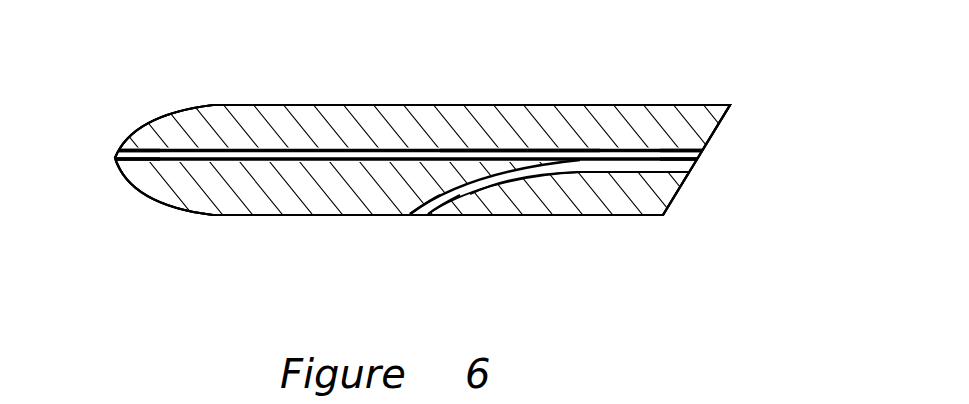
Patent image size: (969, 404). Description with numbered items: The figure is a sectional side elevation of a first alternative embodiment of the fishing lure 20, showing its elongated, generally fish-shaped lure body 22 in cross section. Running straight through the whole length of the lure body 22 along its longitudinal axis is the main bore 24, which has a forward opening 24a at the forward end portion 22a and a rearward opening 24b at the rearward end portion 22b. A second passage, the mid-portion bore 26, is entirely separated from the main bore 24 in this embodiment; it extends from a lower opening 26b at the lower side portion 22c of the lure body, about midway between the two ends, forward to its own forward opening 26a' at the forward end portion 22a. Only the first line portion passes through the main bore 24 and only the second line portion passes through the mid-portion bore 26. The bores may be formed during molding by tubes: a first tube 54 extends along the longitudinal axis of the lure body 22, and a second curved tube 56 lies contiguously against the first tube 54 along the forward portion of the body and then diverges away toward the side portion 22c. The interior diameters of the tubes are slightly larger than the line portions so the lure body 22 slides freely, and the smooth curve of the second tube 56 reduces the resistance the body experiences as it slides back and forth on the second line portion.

The fishing lure 20 is at (568, 82).
The lure body 22 is at (322, 118).
The forward end portion 22a is at (678, 192).
The rearward end portion 22b is at (143, 193).
The lower side portion 22c is at (365, 216).
The main bore 24 is at (441, 148).
The forward opening 24a is at (703, 150).
The rearward opening 24b is at (115, 158).
The mid-portion bore 26 is at (501, 181).
The forward opening 26a' is at (735, 183).
The lower opening 26b is at (427, 216).
The first tube 54 is at (508, 150).
The second curved tube 56 is at (531, 183).